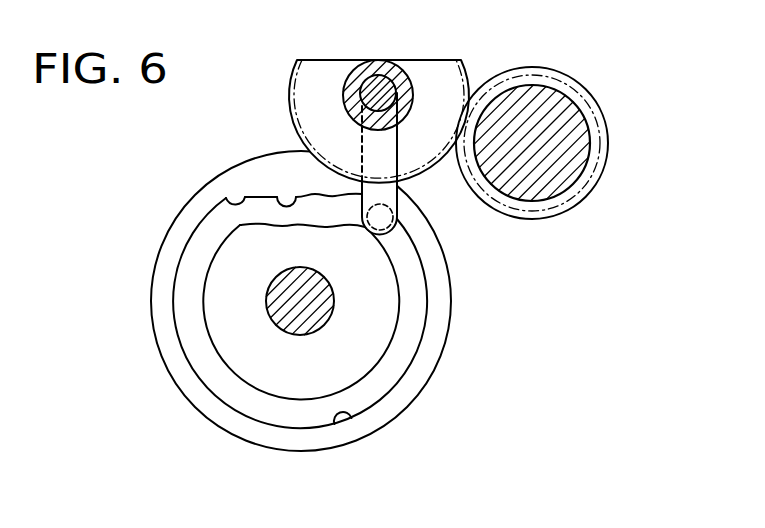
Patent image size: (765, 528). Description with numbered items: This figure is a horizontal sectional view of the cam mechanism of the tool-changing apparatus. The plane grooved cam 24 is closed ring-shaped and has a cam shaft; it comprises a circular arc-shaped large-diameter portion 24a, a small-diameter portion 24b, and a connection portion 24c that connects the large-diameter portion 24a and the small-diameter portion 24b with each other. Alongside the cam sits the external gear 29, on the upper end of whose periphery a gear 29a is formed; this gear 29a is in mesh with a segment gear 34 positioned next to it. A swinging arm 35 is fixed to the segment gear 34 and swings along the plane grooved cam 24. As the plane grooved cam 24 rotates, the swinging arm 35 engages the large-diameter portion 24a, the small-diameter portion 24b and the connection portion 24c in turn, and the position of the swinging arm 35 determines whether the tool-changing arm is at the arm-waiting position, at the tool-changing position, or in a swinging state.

The plane grooved cam 24 is at (432, 334).
The large-diameter portion 24a is at (350, 419).
The small-diameter portion 24b is at (282, 197).
The connection portion 24c is at (233, 197).
The external gear 29 is at (552, 121).
The gear 29a is at (577, 79).
The segment gear 34 is at (432, 62).
The swinging arm 35 is at (384, 123).